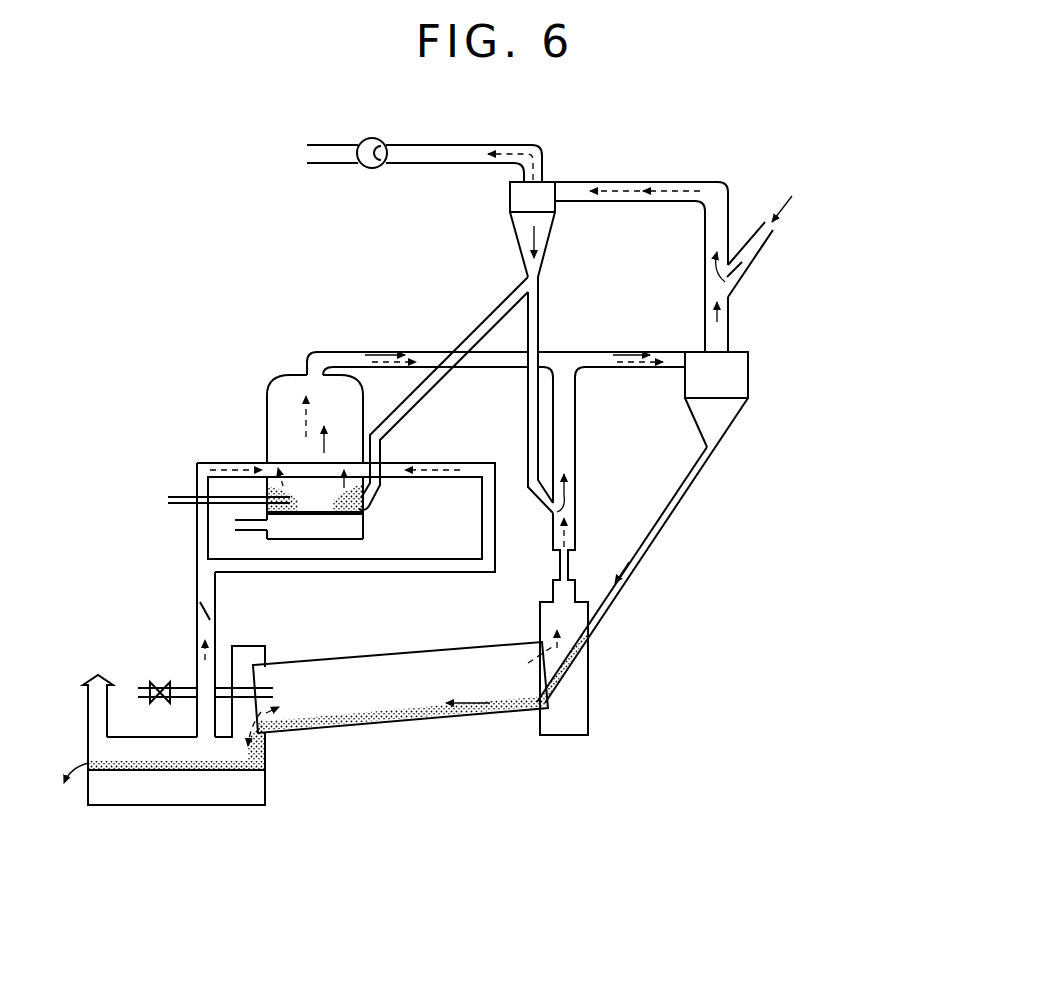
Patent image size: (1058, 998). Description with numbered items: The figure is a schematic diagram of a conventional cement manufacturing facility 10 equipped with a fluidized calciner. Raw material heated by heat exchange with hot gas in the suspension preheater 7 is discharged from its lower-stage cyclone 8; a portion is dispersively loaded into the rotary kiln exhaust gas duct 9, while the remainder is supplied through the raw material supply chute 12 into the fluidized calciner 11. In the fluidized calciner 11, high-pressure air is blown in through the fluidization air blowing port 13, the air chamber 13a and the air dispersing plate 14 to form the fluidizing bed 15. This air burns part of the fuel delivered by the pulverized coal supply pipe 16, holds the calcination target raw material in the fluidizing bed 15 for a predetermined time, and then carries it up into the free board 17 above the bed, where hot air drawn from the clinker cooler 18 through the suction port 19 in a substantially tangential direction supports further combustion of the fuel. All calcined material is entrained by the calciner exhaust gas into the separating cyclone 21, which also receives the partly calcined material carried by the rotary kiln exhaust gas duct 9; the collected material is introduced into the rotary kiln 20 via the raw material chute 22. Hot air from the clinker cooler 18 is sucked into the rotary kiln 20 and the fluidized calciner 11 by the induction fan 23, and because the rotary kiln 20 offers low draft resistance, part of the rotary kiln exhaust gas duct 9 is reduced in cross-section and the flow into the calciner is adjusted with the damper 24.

The suspension preheater 7 is at (643, 163).
The lower-stage cyclone 8 is at (543, 230).
The rotary kiln exhaust gas duct 9 is at (565, 440).
The cement manufacturing facility 10 is at (198, 281).
The fluidized calciner 11 is at (267, 401).
The raw material supply chute 12 is at (363, 510).
The fluidization air blowing port 13 is at (250, 527).
The air chamber 13a is at (350, 527).
The air dispersing plate 14 is at (312, 515).
The fluidizing bed 15 is at (315, 497).
The pulverized coal supply pipe 16 is at (182, 495).
The free board 17 is at (285, 463).
The clinker cooler 18 is at (160, 742).
The suction port 19 is at (263, 472).
The rotary kiln 20 is at (383, 698).
The separating cyclone 21 is at (730, 375).
The raw material chute 22 is at (660, 527).
The induction fan 23 is at (368, 167).
The damper 24 is at (198, 603).